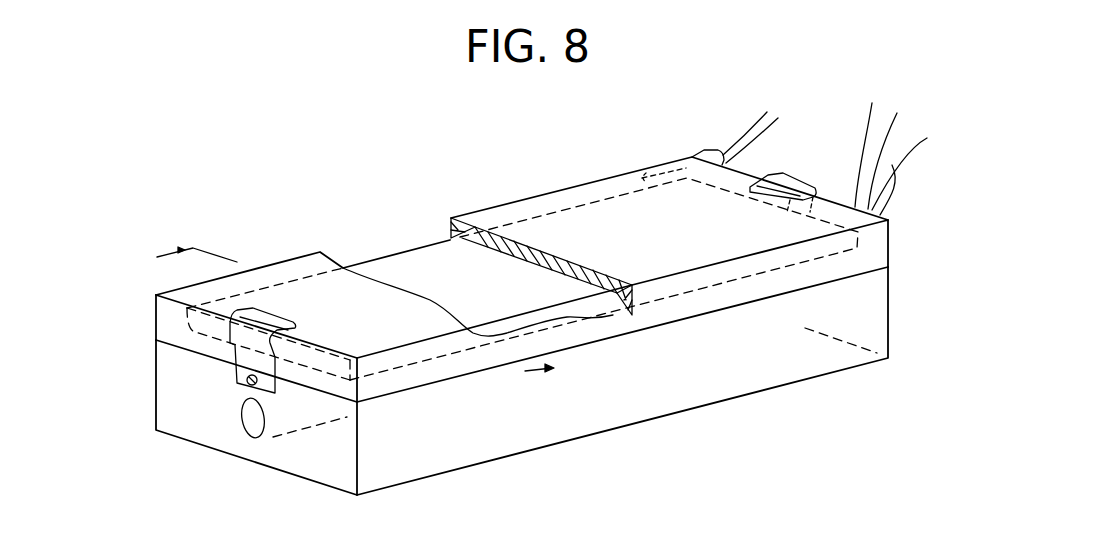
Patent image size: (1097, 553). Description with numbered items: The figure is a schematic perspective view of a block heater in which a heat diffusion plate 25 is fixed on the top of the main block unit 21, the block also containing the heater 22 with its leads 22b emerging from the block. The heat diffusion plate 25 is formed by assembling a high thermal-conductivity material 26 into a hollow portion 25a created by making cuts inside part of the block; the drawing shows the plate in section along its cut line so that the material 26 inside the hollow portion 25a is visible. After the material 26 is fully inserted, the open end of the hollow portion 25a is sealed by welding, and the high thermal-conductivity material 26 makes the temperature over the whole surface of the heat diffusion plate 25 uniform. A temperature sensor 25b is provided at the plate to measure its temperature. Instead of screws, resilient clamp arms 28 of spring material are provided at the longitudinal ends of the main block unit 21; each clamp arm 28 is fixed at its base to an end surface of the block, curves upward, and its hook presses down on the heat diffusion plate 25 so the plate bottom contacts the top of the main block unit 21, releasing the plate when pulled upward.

The main block unit 21 is at (538, 432).
The heater 22 is at (248, 427).
The lead wires 22b is at (872, 103).
The heat diffusion plate 25 is at (293, 267).
The hollow portion 25a is at (616, 298).
The temperature sensor 25b is at (653, 162).
The high thermal-conductivity material 26 is at (413, 260).
The clamp arm 28 is at (230, 352).